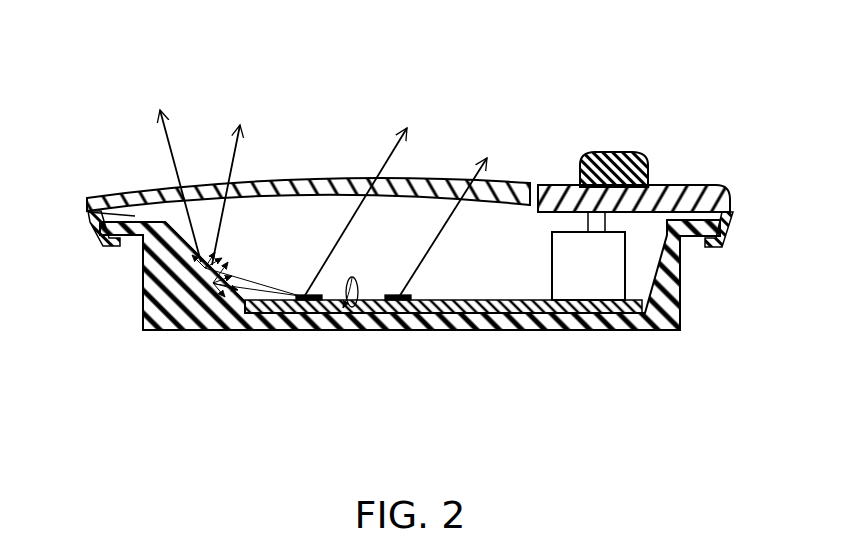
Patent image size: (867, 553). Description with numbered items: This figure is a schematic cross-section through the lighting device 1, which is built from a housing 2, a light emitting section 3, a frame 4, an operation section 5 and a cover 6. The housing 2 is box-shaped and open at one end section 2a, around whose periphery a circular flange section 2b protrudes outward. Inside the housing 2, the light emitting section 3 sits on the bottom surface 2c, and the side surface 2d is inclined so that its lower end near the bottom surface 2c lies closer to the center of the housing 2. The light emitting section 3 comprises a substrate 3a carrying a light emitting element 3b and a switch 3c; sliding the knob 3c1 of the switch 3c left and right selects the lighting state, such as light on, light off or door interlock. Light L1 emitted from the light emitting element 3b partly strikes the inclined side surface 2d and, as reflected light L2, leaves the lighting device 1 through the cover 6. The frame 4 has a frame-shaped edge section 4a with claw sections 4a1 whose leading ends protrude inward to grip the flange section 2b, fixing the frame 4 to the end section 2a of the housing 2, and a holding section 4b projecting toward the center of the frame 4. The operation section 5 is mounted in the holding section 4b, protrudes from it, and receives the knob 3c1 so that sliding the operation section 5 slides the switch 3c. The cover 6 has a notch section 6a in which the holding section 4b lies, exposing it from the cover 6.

The lighting device 1 is at (709, 67).
The housing 2 is at (141, 340).
The end section 2a is at (497, 216).
The flange section 2b is at (127, 245).
The bottom surface 2c is at (350, 308).
The side surface 2d is at (175, 237).
The light emitting section 3 is at (448, 343).
The substrate 3a is at (505, 313).
The light emitting element 3b is at (402, 300).
The switch 3c is at (592, 272).
The knob 3c1 is at (639, 317).
The frame 4 is at (409, 222).
The edge section 4a is at (92, 224).
The claw section 4a1 is at (105, 247).
The holding section 4b is at (717, 200).
The operation section 5 is at (625, 165).
The cover 6 is at (303, 184).
The notch section 6a is at (534, 194).
The emitted light L1 is at (395, 155).
The reflected light L2 is at (168, 148).